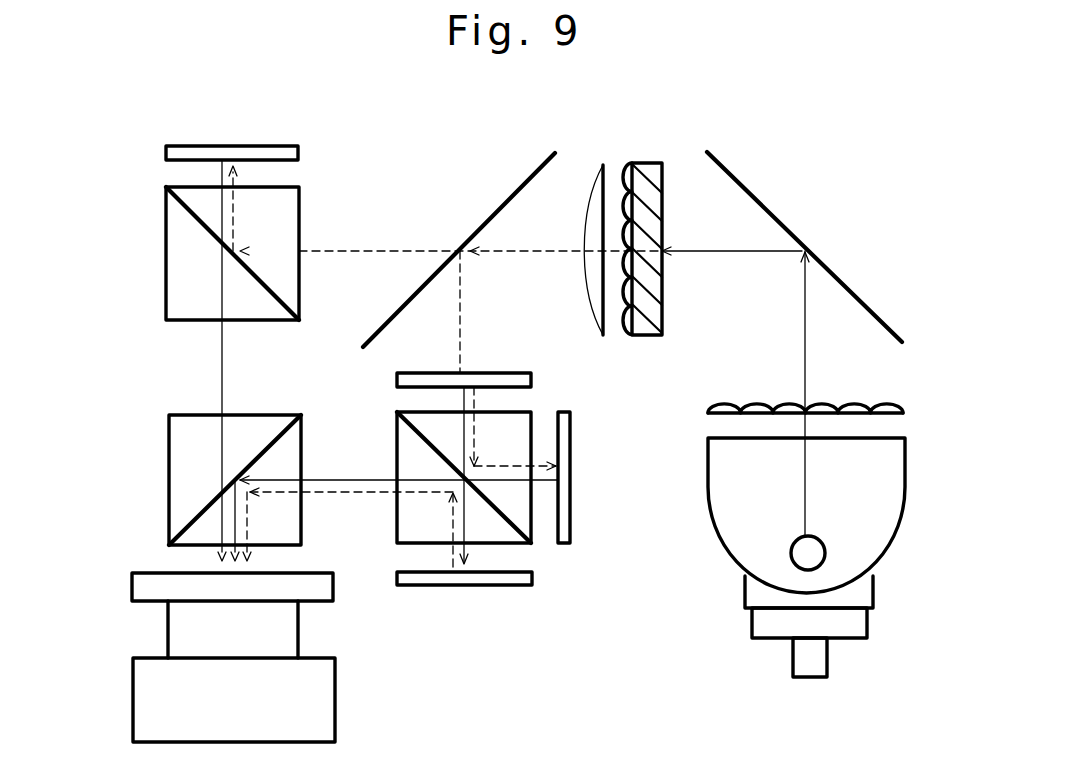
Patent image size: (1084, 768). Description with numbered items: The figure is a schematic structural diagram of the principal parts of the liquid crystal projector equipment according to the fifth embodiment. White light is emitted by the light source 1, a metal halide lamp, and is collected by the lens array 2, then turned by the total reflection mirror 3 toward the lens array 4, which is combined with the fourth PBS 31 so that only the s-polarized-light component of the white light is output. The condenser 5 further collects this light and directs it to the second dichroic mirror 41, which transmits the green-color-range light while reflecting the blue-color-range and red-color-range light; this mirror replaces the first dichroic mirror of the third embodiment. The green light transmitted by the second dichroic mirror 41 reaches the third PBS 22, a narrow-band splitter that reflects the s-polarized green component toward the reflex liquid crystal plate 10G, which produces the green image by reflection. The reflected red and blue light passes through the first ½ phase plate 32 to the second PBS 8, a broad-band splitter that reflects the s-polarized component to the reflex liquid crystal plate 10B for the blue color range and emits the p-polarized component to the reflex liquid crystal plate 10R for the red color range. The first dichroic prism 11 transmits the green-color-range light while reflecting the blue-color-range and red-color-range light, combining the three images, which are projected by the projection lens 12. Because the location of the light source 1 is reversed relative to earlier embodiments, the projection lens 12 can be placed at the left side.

The light source 1 is at (847, 543).
The lens array 2 is at (853, 407).
The total reflection mirror 3 is at (733, 172).
The fourth PBS 31 is at (645, 168).
The lens array 4 is at (627, 170).
The condenser 5 is at (598, 177).
The second dichroic mirror 41 is at (522, 187).
The first ½ phase plate 32 is at (488, 379).
The second PBS 8 is at (410, 437).
The reflex liquid crystal plate for blue color range 10B is at (563, 443).
The reflex liquid crystal plate for red color range 10R is at (493, 577).
The reflex liquid crystal plate for green color range 10G is at (178, 152).
The first dichroic prism 11 is at (183, 432).
The projection lens 12 is at (162, 673).
The third PBS 22 is at (190, 225).